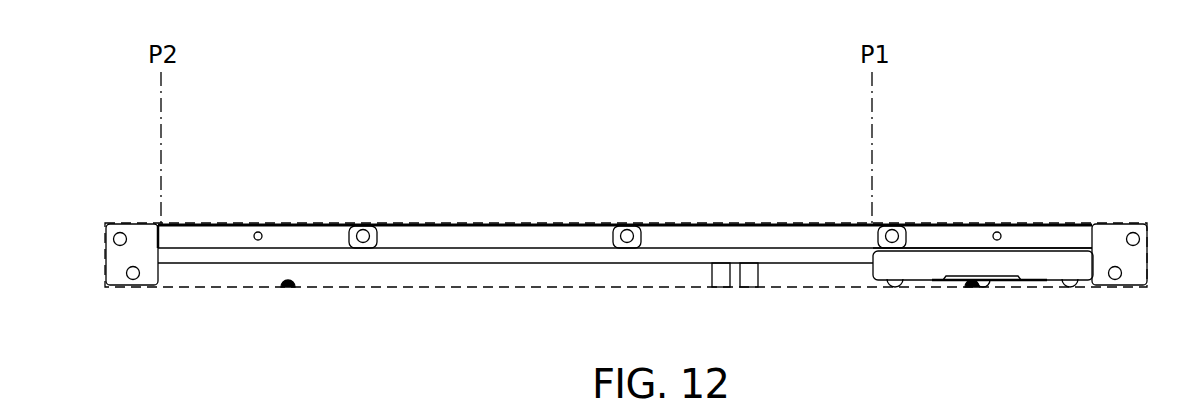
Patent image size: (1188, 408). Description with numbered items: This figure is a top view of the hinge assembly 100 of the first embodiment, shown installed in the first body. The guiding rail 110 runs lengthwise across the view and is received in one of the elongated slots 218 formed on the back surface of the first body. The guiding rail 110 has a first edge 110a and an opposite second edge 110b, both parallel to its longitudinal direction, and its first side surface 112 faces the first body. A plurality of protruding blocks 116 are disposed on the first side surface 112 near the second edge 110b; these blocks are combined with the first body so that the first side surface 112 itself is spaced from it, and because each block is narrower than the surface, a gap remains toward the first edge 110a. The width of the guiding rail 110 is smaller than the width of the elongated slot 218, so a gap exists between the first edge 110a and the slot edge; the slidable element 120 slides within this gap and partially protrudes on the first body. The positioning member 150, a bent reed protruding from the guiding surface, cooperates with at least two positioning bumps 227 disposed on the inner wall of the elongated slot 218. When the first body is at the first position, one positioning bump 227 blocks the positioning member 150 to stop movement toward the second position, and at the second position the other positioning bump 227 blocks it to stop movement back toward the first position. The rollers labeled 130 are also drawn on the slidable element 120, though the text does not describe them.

The hinge assembly 100 is at (1024, 170).
The guiding rail 110 is at (137, 236).
The first edge 110a is at (410, 274).
The second edge 110b is at (451, 216).
The first side surface 112 is at (829, 242).
The protruding blocks 116 is at (697, 238).
The slidable element 120 is at (1052, 267).
The roller wheel 130 is at (890, 288).
The positioning member 150 is at (985, 288).
The elongated slots 218 is at (207, 290).
The positioning bumps 227 is at (287, 290).